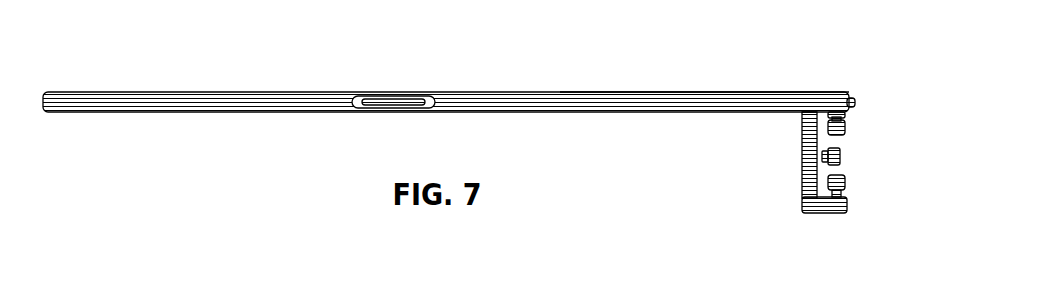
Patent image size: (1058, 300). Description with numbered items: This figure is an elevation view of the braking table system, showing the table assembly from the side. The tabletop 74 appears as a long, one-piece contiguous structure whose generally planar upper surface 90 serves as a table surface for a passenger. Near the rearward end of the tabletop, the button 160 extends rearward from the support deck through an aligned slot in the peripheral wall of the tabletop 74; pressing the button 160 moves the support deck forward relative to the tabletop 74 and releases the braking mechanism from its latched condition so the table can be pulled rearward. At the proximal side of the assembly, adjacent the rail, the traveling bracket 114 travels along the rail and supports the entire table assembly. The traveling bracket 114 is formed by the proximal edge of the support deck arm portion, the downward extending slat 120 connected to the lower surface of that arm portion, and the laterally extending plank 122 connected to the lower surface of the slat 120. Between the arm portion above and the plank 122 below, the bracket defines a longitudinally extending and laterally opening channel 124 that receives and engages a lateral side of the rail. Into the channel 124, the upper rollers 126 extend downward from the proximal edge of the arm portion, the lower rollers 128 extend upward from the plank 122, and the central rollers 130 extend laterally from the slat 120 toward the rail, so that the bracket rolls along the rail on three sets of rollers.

The tabletop 74 is at (268, 98).
The upper surface 90 is at (485, 92).
The button 160 is at (368, 112).
The traveling bracket 114 is at (772, 157).
The slat 120 is at (803, 180).
The plank 122 is at (825, 206).
The upper rollers 126 is at (845, 122).
The channel 124 is at (848, 155).
The central rollers 130 is at (842, 162).
The lower rollers 128 is at (843, 192).